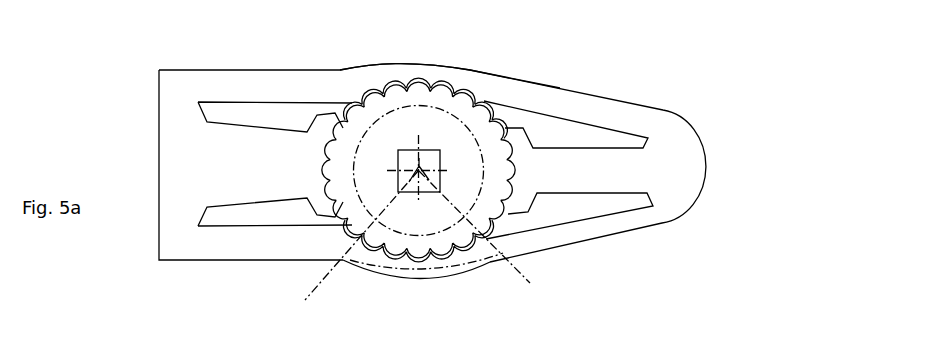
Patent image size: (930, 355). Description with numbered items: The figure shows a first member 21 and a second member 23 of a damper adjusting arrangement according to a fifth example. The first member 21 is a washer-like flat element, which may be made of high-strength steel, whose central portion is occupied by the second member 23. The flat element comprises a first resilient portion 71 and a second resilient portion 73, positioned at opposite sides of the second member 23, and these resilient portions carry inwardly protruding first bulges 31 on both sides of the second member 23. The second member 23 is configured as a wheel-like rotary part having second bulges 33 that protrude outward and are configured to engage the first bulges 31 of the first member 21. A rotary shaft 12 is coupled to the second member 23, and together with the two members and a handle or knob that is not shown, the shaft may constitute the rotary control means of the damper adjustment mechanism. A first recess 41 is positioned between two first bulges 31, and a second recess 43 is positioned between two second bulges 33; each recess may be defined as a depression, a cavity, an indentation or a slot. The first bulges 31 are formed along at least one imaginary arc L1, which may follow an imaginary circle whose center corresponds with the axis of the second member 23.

The first member 21 is at (740, 142).
The first resilient portion 71 is at (383, 51).
The second resilient portion 73 is at (487, 283).
The second recess 43 is at (372, 89).
The second bulges 33 is at (496, 111).
The first bulges 31 is at (438, 88).
The first recess 41 is at (442, 100).
The rotary shaft 12 is at (412, 192).
The second member 23 is at (397, 170).
The imaginary arc L1 is at (421, 268).